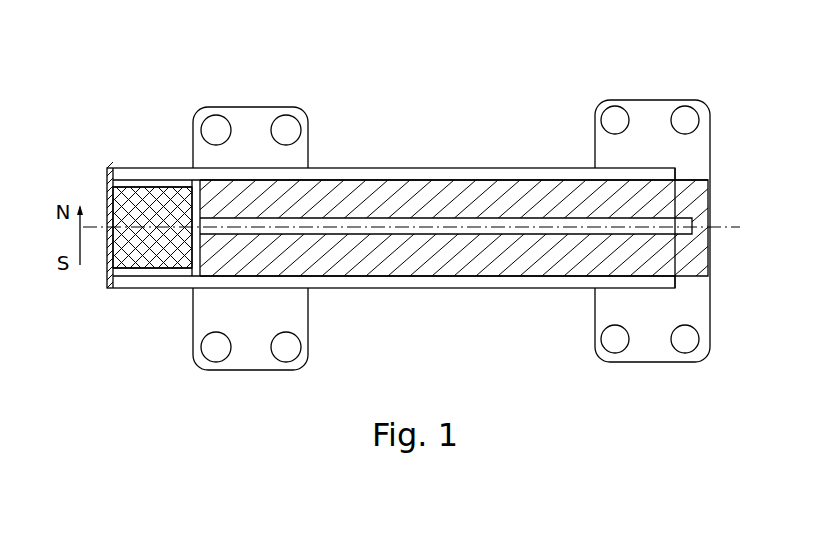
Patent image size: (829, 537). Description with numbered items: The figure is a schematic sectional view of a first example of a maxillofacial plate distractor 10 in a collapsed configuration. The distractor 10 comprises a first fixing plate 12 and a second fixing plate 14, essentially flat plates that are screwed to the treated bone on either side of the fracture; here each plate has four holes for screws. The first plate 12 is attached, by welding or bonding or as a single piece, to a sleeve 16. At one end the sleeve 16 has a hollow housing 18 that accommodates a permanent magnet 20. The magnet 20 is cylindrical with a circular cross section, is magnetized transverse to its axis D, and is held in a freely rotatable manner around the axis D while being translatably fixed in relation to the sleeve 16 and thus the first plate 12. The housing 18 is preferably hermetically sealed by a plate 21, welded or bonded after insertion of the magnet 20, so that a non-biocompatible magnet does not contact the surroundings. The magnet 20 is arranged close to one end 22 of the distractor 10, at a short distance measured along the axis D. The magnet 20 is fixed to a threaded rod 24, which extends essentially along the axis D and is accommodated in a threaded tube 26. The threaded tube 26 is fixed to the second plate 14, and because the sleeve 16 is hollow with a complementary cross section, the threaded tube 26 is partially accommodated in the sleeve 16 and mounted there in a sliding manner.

The maxillofacial plate distractor 10 is at (443, 80).
The first fixing plate 12 is at (245, 120).
The second fixing plate 14 is at (645, 120).
The sleeve 16 is at (392, 288).
The hollow housing 18 is at (172, 217).
The permanent magnet 20 is at (143, 255).
The plate 21 is at (105, 263).
The end 22 is at (105, 182).
The threaded rod 24 is at (382, 226).
The threaded tube 26 is at (540, 262).
The axis D is at (480, 234).